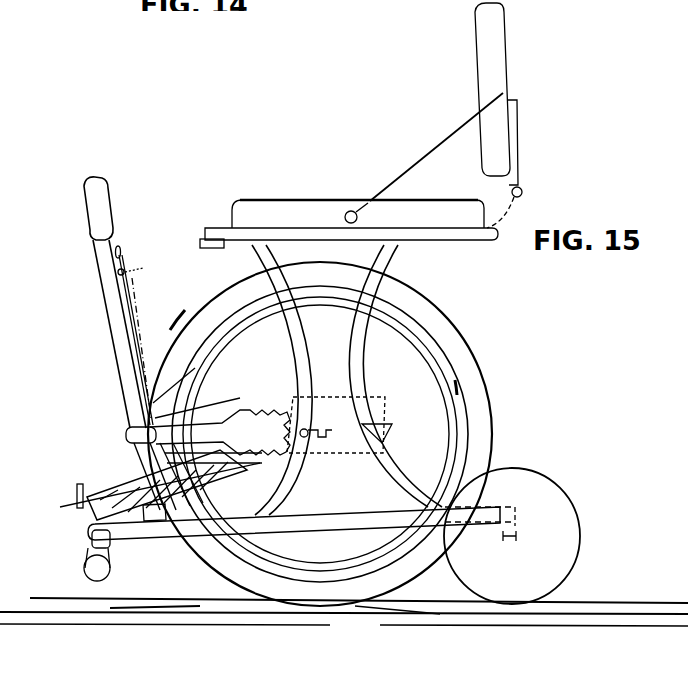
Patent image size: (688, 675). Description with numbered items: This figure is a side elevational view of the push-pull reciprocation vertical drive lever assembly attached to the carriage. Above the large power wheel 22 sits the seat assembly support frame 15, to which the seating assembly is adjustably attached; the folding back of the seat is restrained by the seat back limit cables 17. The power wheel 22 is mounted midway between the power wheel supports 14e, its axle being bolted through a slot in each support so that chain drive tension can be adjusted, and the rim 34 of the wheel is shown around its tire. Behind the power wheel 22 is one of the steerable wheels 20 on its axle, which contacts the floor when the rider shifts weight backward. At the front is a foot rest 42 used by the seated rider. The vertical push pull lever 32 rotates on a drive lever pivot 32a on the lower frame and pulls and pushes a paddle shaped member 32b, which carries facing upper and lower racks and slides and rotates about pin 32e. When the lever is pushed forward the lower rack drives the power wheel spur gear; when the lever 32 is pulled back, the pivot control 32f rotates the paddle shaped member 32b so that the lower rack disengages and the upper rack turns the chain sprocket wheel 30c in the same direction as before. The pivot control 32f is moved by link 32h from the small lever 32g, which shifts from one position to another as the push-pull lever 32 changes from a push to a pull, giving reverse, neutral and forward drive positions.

The seat assembly support frame 15 is at (291, 234).
The seat back limit cables 17 is at (421, 143).
The steerable wheels 20 is at (518, 487).
The power wheel 22 is at (432, 320).
The wheel rim 34 is at (457, 387).
The power wheel support 14e is at (337, 403).
The chain sprocket wheel 30c is at (313, 437).
The vertical push pull lever 32 is at (100, 218).
The drive lever pivot 32a is at (148, 522).
The paddle shaped member 32b is at (247, 407).
The pin 32e is at (382, 427).
The pivot control 32f is at (137, 438).
The small lever 32g is at (143, 267).
The link 32h is at (128, 313).
The foot rests 42 is at (82, 502).